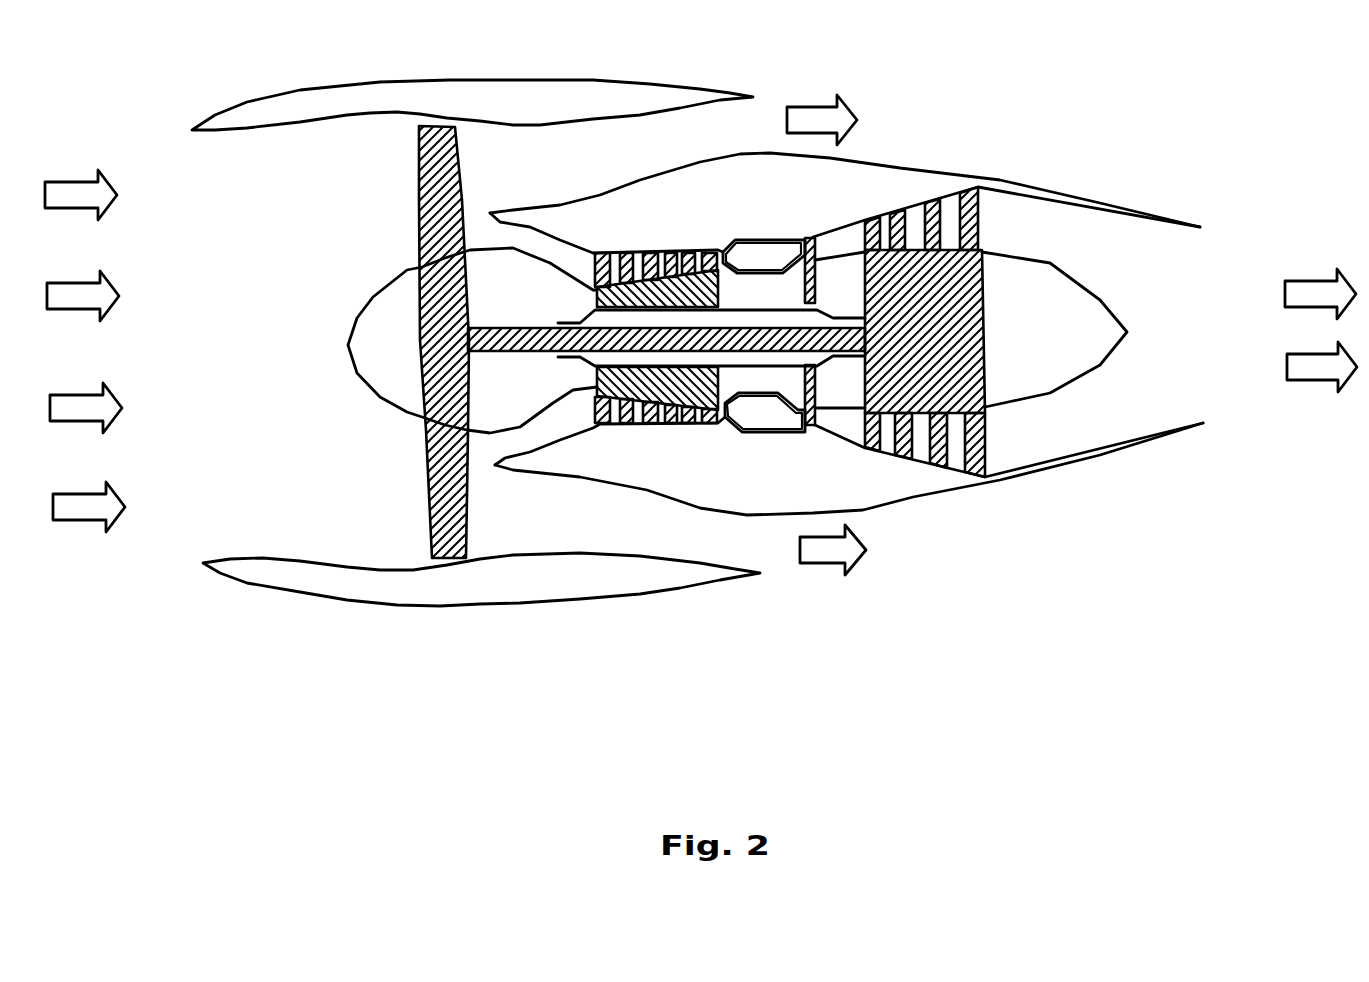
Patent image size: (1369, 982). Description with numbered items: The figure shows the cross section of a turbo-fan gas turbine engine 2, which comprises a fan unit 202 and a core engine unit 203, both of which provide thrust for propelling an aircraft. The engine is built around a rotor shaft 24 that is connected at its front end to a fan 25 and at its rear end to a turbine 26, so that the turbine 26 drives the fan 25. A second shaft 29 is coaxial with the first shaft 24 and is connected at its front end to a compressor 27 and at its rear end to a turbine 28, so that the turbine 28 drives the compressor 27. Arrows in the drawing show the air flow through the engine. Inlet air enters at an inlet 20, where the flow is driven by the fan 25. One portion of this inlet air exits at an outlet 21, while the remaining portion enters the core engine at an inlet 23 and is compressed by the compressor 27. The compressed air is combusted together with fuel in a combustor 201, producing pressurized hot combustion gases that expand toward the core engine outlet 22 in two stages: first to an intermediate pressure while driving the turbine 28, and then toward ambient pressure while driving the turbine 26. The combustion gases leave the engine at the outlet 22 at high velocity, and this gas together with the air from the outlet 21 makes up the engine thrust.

The engine 2 is at (987, 577).
The inlet 20 is at (197, 340).
The outlet 21 is at (750, 122).
The core engine outlet 22 is at (1198, 297).
The inlet 23 is at (492, 237).
The rotor shaft 24 is at (540, 330).
The fan 25 is at (430, 190).
The turbine 26 is at (978, 217).
The compressor 27 is at (660, 253).
The turbine 28 is at (806, 240).
The second shaft 29 is at (737, 307).
The combustor 201 is at (745, 253).
The fan unit 202 is at (410, 453).
The core engine unit 203 is at (870, 485).